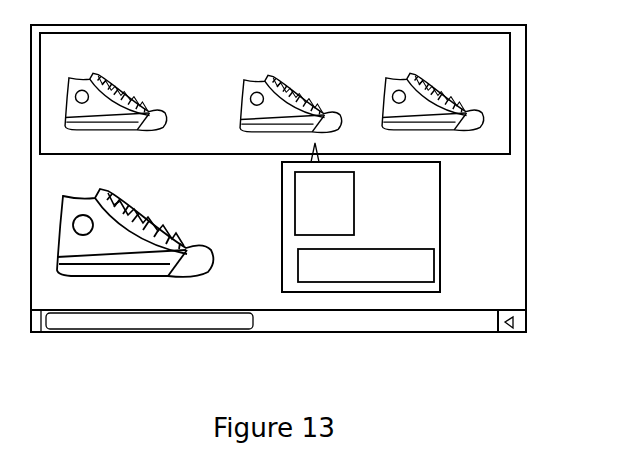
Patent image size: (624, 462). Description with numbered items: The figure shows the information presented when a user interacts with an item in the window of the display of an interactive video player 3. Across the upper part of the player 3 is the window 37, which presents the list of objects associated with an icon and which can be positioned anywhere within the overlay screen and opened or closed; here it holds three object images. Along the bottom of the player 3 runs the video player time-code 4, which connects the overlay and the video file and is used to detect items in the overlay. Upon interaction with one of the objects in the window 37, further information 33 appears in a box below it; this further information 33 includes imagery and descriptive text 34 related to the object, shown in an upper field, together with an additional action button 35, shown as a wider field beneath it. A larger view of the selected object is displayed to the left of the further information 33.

The interactive video player 3 is at (516, 197).
The video player time-code 4 is at (145, 322).
The further information 33 is at (288, 240).
The imagery and descriptive text 34 is at (340, 193).
The additional action button 35 is at (365, 255).
The window 37 is at (504, 95).